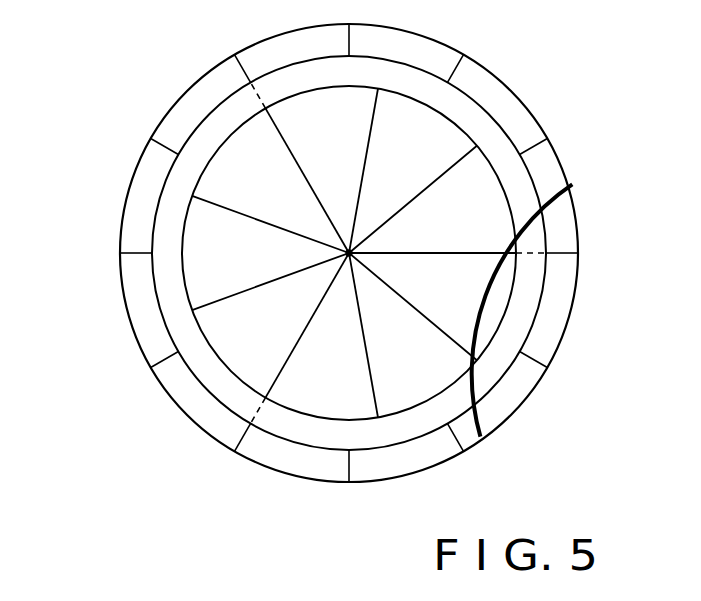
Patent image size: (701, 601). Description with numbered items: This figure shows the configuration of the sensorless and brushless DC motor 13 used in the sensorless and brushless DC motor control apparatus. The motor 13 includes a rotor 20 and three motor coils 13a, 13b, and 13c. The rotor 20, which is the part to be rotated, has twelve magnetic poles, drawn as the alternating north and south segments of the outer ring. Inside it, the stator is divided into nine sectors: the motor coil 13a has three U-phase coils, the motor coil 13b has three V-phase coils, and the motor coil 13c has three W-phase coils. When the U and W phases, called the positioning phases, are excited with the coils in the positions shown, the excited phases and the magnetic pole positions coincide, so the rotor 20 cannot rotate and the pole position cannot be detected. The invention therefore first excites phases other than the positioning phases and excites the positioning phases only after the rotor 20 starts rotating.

The sensorless and brushless DC motor 13 is at (100, 31).
The motor coil 13a is at (182, 257).
The motor coil 13b is at (227, 257).
The motor coil 13c is at (254, 283).
The rotor 20 is at (543, 128).